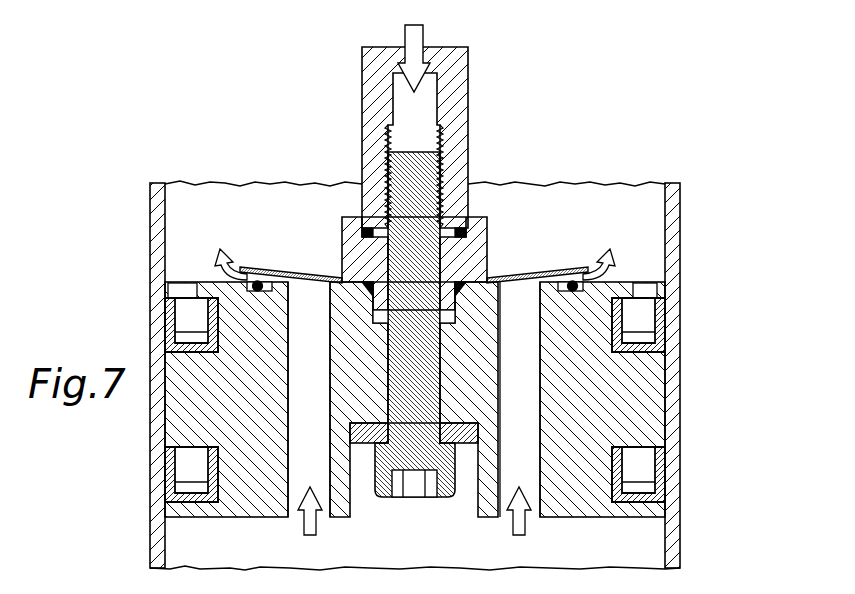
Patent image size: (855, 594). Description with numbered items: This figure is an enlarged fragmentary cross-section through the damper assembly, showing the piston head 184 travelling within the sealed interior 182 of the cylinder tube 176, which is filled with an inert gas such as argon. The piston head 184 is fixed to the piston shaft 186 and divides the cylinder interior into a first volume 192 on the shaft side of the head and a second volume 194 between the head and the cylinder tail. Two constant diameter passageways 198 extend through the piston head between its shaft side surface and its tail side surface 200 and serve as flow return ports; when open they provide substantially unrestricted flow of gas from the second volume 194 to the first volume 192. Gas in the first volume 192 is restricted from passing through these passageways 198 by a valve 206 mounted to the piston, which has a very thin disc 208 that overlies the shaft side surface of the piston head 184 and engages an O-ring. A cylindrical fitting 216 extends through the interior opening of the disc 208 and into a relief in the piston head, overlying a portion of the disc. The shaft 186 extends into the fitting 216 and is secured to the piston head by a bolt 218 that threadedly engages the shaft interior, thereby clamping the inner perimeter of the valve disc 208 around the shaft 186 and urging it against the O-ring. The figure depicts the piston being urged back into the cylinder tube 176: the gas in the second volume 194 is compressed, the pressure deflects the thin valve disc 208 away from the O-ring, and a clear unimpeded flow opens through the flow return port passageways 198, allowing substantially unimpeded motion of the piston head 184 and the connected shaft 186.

The cylinder tube 176 is at (681, 396).
The sealed interior 182 is at (662, 198).
The piston head 184 is at (601, 517).
The piston shaft 186 is at (437, 166).
The first volume 192 is at (584, 226).
The second volume 194 is at (471, 556).
The constant diameter passageways 198 is at (294, 512).
The tail side surface 200 is at (338, 517).
The valve 206 is at (273, 268).
The valve disc 208 is at (519, 277).
The cylindrical fitting 216 is at (342, 247).
The bolt 218 is at (443, 497).